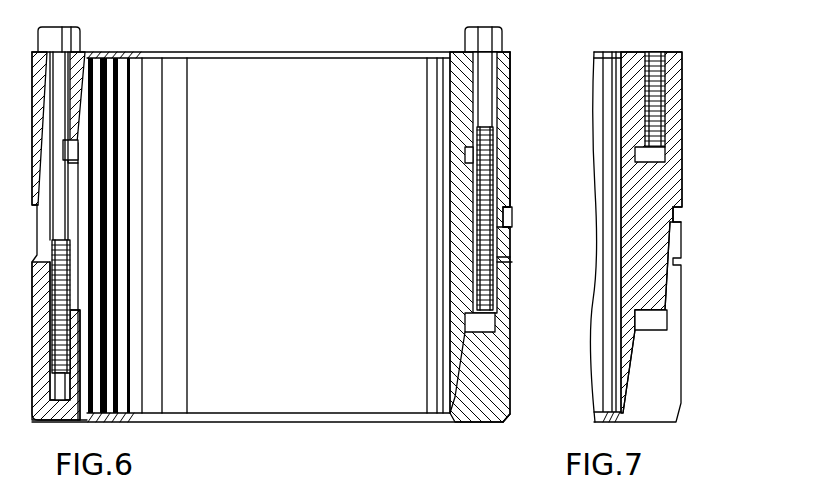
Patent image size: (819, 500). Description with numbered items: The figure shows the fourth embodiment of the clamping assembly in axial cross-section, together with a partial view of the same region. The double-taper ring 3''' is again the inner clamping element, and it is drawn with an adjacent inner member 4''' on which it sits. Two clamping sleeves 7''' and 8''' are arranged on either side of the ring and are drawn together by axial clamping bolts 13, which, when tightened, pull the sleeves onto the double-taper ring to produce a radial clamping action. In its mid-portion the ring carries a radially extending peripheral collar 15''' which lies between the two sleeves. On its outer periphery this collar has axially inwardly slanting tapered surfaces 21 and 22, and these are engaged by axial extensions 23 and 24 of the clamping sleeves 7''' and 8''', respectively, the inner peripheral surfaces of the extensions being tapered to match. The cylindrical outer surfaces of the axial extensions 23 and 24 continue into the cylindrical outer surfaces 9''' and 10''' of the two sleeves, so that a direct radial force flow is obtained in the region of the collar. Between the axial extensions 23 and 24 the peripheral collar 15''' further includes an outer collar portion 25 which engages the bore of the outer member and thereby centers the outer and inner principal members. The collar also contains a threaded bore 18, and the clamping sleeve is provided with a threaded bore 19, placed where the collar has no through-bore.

In FIG. 6, the double-taper ring 3''' is at (271, 237).
In FIG. 7, the double-taper ring 3''' is at (620, 237).
In FIG. 6, the inner liner 4''' is at (296, 235).
In FIG. 7, the inner liner 4''' is at (589, 237).
In FIG. 6, the clamping sleeve 7''' is at (500, 237).
In FIG. 6, the clamping sleeve 8''' is at (500, 372).
In FIG. 6, the cylindrical outer surface 9''' is at (529, 129).
In FIG. 6, the cylindrical outer surface 10''' is at (535, 411).
In FIG. 6, the clamping bolt 13 is at (503, 33).
In FIG. 6, the peripheral collar 15''' is at (533, 229).
In FIG. 6, the threaded bore 18 is at (500, 268).
In FIG. 7, the threaded bore 19 is at (652, 52).
In FIG. 6, the tapered surface 21 is at (505, 210).
In FIG. 6, the tapered surface 22 is at (507, 262).
In FIG. 6, the axial extension 23 is at (500, 176).
In FIG. 6, the axial extension 24 is at (510, 300).
In FIG. 7, the outer collar portion 25 is at (677, 227).